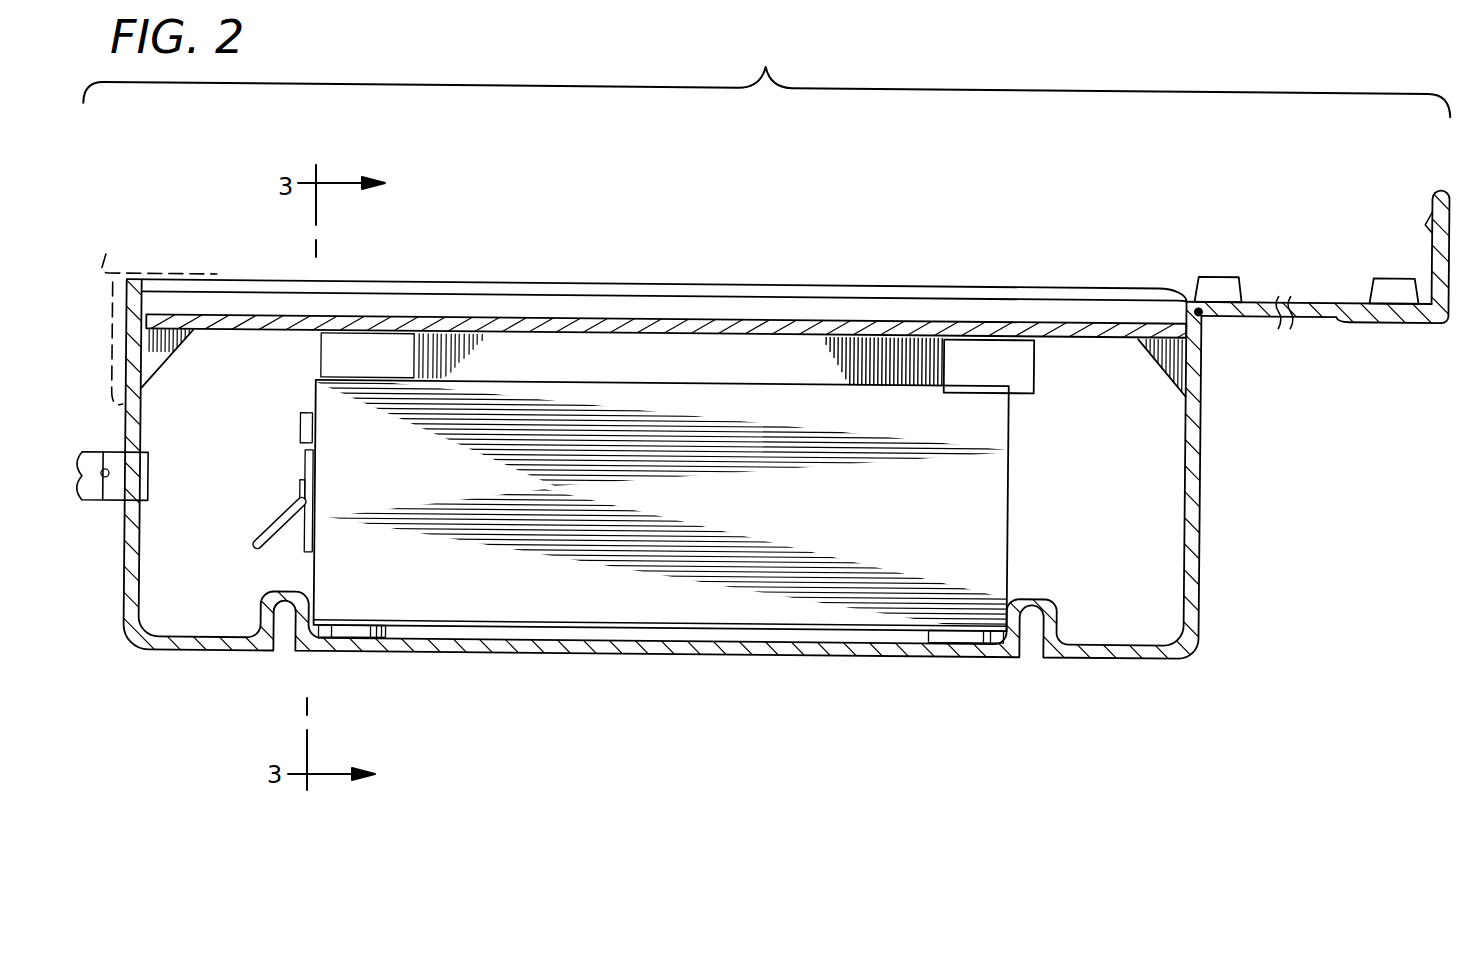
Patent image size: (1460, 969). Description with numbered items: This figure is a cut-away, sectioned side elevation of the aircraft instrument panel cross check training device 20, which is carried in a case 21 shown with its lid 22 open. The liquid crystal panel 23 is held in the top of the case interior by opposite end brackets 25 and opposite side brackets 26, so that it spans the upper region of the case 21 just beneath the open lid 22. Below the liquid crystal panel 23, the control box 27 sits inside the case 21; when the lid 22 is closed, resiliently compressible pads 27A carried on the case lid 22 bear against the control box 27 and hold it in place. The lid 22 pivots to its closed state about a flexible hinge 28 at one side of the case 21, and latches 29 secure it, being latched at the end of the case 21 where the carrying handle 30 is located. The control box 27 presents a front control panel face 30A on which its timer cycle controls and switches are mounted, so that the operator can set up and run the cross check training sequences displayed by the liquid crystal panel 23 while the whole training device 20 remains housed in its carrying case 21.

The aircraft instrument panel cross check training device 20 is at (272, 400).
The case 21 is at (180, 657).
The lid 22 is at (1257, 318).
The liquid crystal panel 23 is at (915, 300).
The opposite end brackets 25 is at (166, 359).
The opposite side brackets 26 is at (1028, 372).
The control box 27 is at (1010, 470).
The resiliently compressible pads 27A is at (1376, 282).
The flexible hinge 28 is at (1203, 315).
The latches 29 is at (1438, 197).
The carrying handle 30 is at (97, 500).
The front control panel face 30A is at (307, 579).